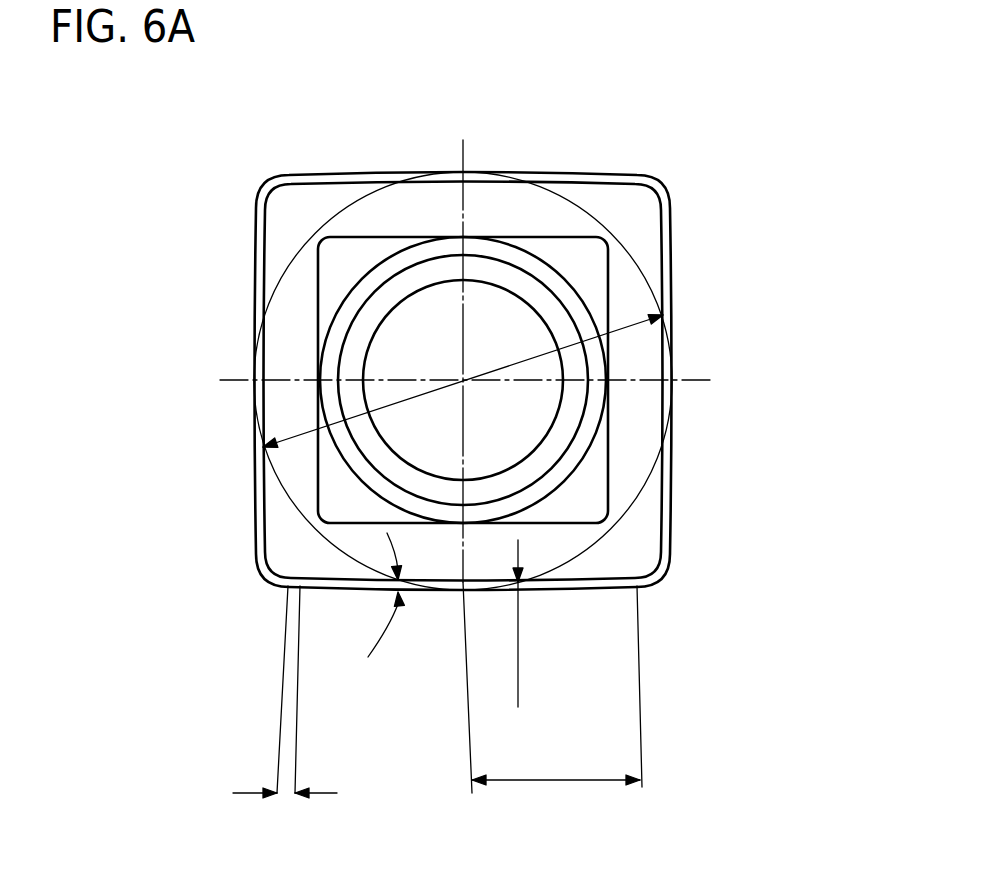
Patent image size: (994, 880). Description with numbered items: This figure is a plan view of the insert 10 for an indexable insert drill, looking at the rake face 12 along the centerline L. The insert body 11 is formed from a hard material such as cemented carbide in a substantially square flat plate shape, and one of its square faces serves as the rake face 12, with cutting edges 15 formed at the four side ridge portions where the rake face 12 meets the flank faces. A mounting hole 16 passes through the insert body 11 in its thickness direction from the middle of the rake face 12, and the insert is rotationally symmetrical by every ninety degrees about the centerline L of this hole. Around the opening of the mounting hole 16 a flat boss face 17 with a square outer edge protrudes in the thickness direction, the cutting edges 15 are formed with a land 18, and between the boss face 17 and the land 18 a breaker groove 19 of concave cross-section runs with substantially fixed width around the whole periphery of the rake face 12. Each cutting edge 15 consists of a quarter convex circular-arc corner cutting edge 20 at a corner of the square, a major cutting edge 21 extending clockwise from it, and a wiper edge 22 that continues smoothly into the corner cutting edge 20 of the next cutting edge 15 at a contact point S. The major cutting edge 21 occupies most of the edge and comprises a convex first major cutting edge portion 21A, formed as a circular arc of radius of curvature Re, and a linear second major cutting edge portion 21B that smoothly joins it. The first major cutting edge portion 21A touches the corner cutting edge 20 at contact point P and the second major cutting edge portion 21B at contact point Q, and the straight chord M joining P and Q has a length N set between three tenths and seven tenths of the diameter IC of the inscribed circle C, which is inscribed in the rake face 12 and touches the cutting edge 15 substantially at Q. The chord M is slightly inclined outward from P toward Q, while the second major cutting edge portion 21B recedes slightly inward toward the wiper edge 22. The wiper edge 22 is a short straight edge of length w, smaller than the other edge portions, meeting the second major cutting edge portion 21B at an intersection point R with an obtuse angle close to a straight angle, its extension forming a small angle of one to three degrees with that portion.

The insert 10 is at (672, 158).
The insert body 11 is at (672, 227).
The rake face 12 is at (358, 540).
The cutting edges 15 is at (557, 171).
The mounting hole 16 is at (390, 312).
The boss face 17 is at (352, 253).
The land 18 is at (253, 502).
The breaker groove 19 is at (282, 469).
The corner cutting edge 20 is at (258, 572).
The major cutting edge 21 is at (433, 730).
The first major cutting edge portion 21A is at (503, 593).
The second major cutting edge portion 21B is at (415, 593).
The wiper edge 22 is at (307, 587).
The inscribed circle C is at (643, 487).
The diameter of inscribed circle IC is at (463, 381).
The centerline L is at (463, 380).
The contact point S is at (283, 587).
The intersection point R is at (308, 587).
The contact point Q is at (460, 593).
The radius of curvature Re is at (536, 623).
The chord M is at (588, 593).
The contact point P is at (645, 590).
The length of chord N is at (557, 702).
The length of wiper edge w is at (285, 709).